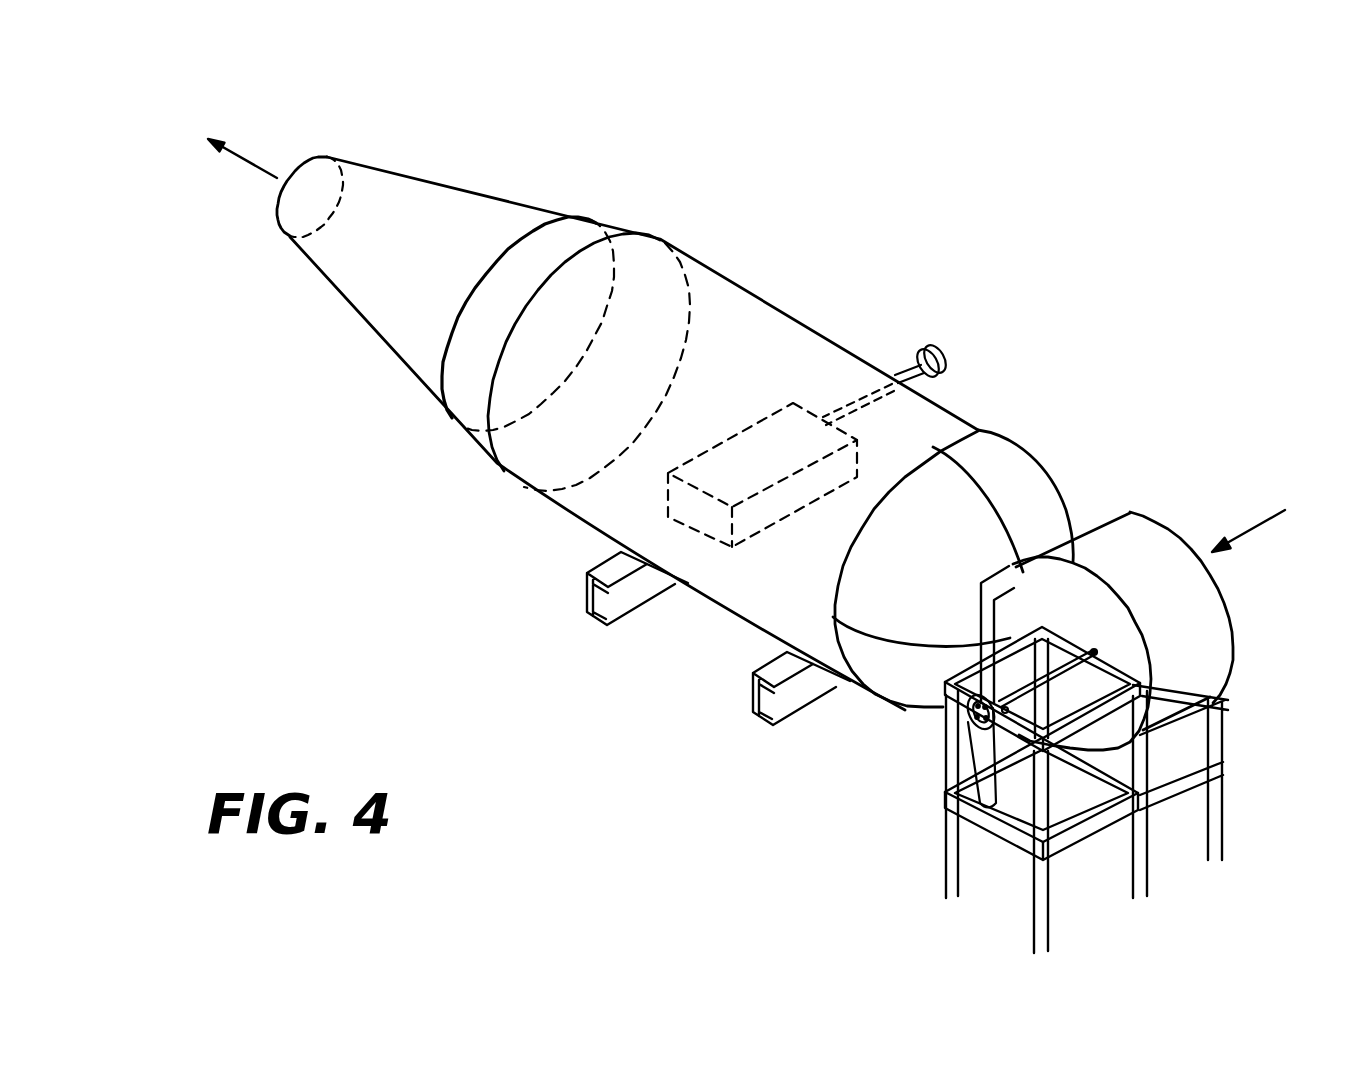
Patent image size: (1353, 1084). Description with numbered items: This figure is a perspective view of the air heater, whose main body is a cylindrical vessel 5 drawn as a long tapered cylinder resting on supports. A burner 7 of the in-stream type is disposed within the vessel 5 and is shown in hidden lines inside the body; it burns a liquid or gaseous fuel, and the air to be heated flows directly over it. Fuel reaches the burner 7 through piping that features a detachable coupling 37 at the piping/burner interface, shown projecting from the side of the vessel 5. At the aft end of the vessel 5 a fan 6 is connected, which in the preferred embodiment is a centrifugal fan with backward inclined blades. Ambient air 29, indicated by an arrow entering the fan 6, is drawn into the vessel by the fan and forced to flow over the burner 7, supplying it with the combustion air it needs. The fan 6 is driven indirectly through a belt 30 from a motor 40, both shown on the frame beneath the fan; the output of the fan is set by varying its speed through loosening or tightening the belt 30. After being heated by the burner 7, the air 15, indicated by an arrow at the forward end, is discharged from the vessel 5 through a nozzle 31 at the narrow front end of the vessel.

The cylindrical vessel 5 is at (772, 300).
The fan 6 is at (1122, 512).
The burner 7 is at (732, 548).
The air 15 is at (248, 160).
The ambient air 29 is at (1270, 522).
The belt 30 is at (970, 753).
The nozzle 31 is at (278, 205).
The detachable coupling 37 is at (923, 347).
The motor 40 is at (1026, 810).